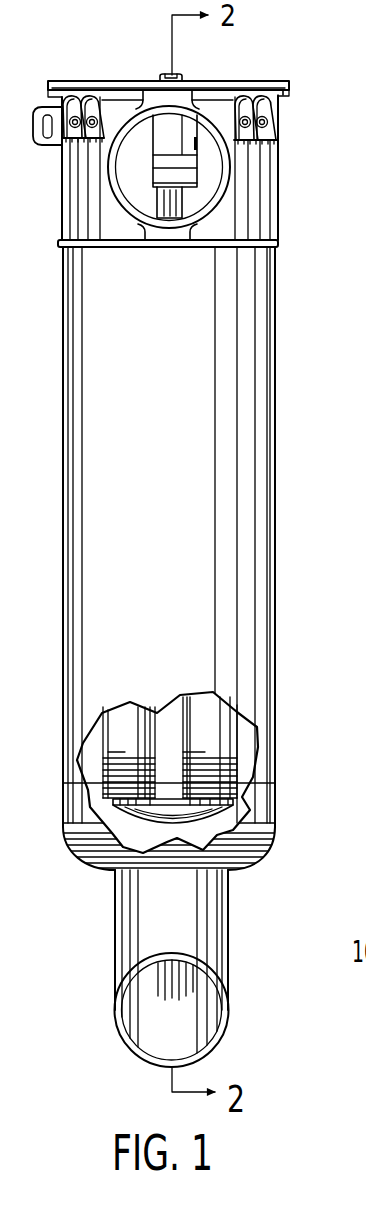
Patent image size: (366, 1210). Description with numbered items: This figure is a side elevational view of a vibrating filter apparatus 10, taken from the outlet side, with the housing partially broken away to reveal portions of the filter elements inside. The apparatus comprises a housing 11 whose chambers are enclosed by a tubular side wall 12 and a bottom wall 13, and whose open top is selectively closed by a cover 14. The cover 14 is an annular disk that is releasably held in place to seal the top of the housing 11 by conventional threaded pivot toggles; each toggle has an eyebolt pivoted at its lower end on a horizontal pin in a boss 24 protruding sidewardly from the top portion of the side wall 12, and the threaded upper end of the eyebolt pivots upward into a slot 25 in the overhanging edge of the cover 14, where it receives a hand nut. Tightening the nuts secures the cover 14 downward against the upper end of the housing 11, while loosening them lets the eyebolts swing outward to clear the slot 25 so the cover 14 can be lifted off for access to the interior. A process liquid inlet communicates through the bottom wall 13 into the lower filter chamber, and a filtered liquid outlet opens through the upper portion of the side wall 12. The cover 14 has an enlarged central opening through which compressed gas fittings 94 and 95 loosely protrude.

The vibrating filter apparatus 10 is at (292, 626).
The housing 11 is at (281, 473).
The side wall 12 is at (276, 528).
The bottom wall 13 is at (277, 813).
The cover 14 is at (87, 81).
The boss 24 is at (240, 81).
The slot 25 is at (276, 81).
The compressed gas fitting 94 is at (163, 73).
The compressed gas fitting 95 is at (181, 78).